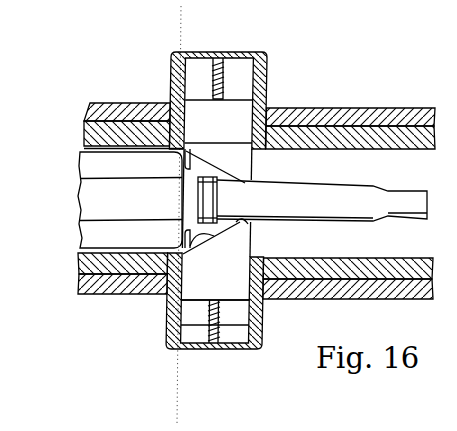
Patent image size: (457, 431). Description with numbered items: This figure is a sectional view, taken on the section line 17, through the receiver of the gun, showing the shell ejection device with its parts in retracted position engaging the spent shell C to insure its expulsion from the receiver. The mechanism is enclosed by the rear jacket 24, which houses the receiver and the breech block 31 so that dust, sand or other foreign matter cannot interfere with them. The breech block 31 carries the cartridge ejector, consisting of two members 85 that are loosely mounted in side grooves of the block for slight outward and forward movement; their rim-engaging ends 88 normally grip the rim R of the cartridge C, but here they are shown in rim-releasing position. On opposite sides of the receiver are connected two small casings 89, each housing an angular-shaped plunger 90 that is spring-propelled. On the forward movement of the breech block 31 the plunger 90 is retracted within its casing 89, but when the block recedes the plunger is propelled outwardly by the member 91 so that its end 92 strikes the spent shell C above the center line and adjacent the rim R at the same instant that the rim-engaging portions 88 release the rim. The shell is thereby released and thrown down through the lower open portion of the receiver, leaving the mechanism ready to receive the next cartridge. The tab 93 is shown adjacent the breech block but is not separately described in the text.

The section line 17- 17 is at (186, 51).
The rear jacket 24 is at (110, 295).
The breech block 31 is at (80, 199).
The cartridge ejector member 85 is at (142, 148).
The rim-engaging end 88 is at (222, 234).
The casing 89 is at (266, 90).
The angular-shaped plunger 90 is at (197, 280).
The propelling member 91 is at (183, 326).
The plunger end 92 is at (248, 225).
The tab 93 is at (170, 238).
The cartridge C is at (277, 194).
The rim R is at (206, 205).